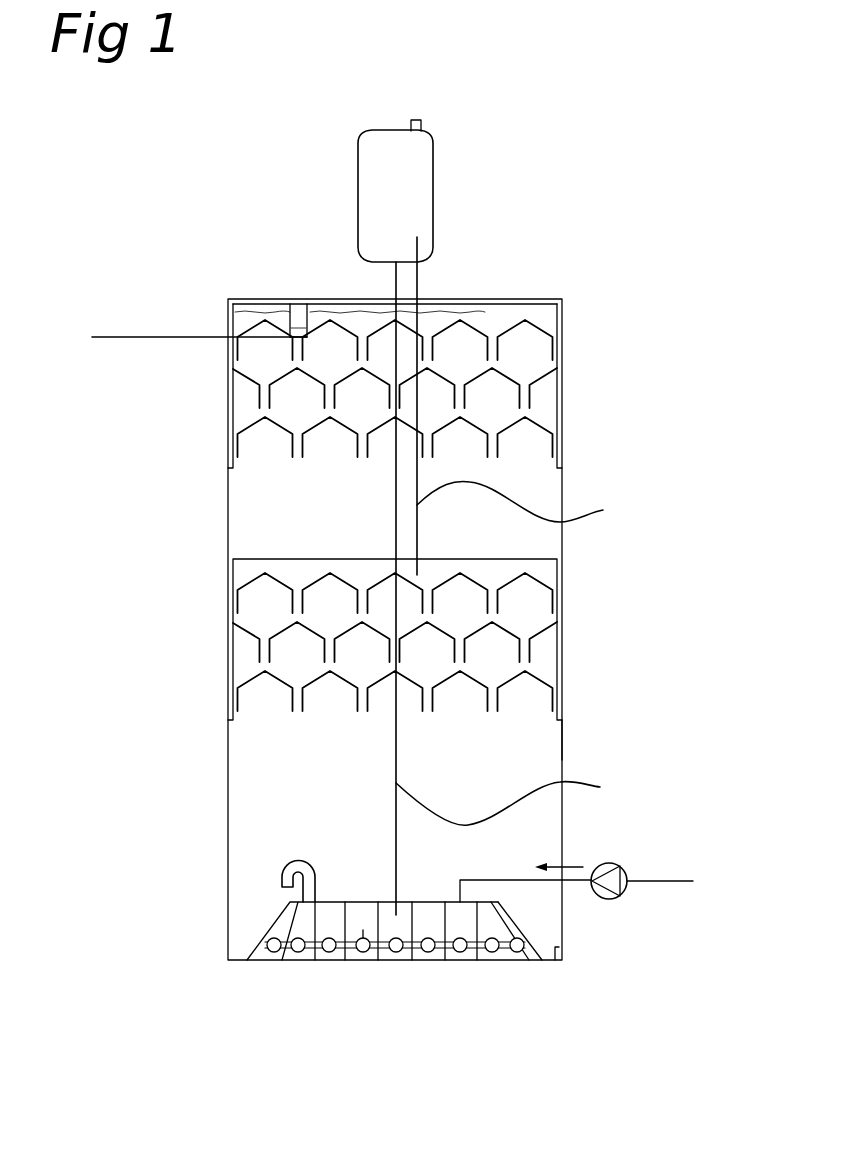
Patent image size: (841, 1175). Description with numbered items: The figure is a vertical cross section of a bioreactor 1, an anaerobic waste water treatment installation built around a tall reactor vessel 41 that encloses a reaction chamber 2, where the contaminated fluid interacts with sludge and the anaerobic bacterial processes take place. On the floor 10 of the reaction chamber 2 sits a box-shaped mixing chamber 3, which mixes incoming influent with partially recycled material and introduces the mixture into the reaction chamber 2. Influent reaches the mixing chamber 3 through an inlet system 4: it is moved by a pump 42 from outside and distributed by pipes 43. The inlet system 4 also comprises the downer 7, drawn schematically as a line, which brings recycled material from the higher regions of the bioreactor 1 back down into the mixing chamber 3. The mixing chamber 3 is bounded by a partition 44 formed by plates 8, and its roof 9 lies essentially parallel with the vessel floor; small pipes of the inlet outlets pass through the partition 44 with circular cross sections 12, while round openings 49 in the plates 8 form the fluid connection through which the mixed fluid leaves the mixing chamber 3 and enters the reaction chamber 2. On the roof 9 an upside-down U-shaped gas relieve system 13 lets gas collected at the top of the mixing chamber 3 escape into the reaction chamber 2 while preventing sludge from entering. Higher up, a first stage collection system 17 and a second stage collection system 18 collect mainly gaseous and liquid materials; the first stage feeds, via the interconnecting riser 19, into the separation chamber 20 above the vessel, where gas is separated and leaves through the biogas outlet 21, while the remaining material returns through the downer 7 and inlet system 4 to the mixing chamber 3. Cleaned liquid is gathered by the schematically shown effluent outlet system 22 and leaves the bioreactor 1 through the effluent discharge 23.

The bioreactor 1 is at (483, 288).
The reaction chamber 2 is at (245, 784).
The mixing chamber 3 is at (343, 970).
The inlet system 4 is at (476, 874).
The downer 7 is at (508, 801).
The plates 8 is at (423, 908).
The roof 9 is at (438, 902).
The floor 10 is at (562, 960).
The circular cross sections 12 is at (520, 952).
The gas relieve system 13 is at (298, 870).
The first stage collection system 17 is at (222, 653).
The second stage collection system 18 is at (221, 389).
The interconnecting riser 19 is at (529, 501).
The separation chamber 20 is at (372, 182).
The biogas outlet 21 is at (417, 120).
The effluent outlet system 22 is at (298, 304).
The effluent discharge 23 is at (133, 337).
The reactor vessel 41 is at (562, 738).
The pump 42 is at (612, 868).
The pipes 43 is at (645, 881).
The partition 44 is at (536, 927).
The round openings 49 is at (367, 908).